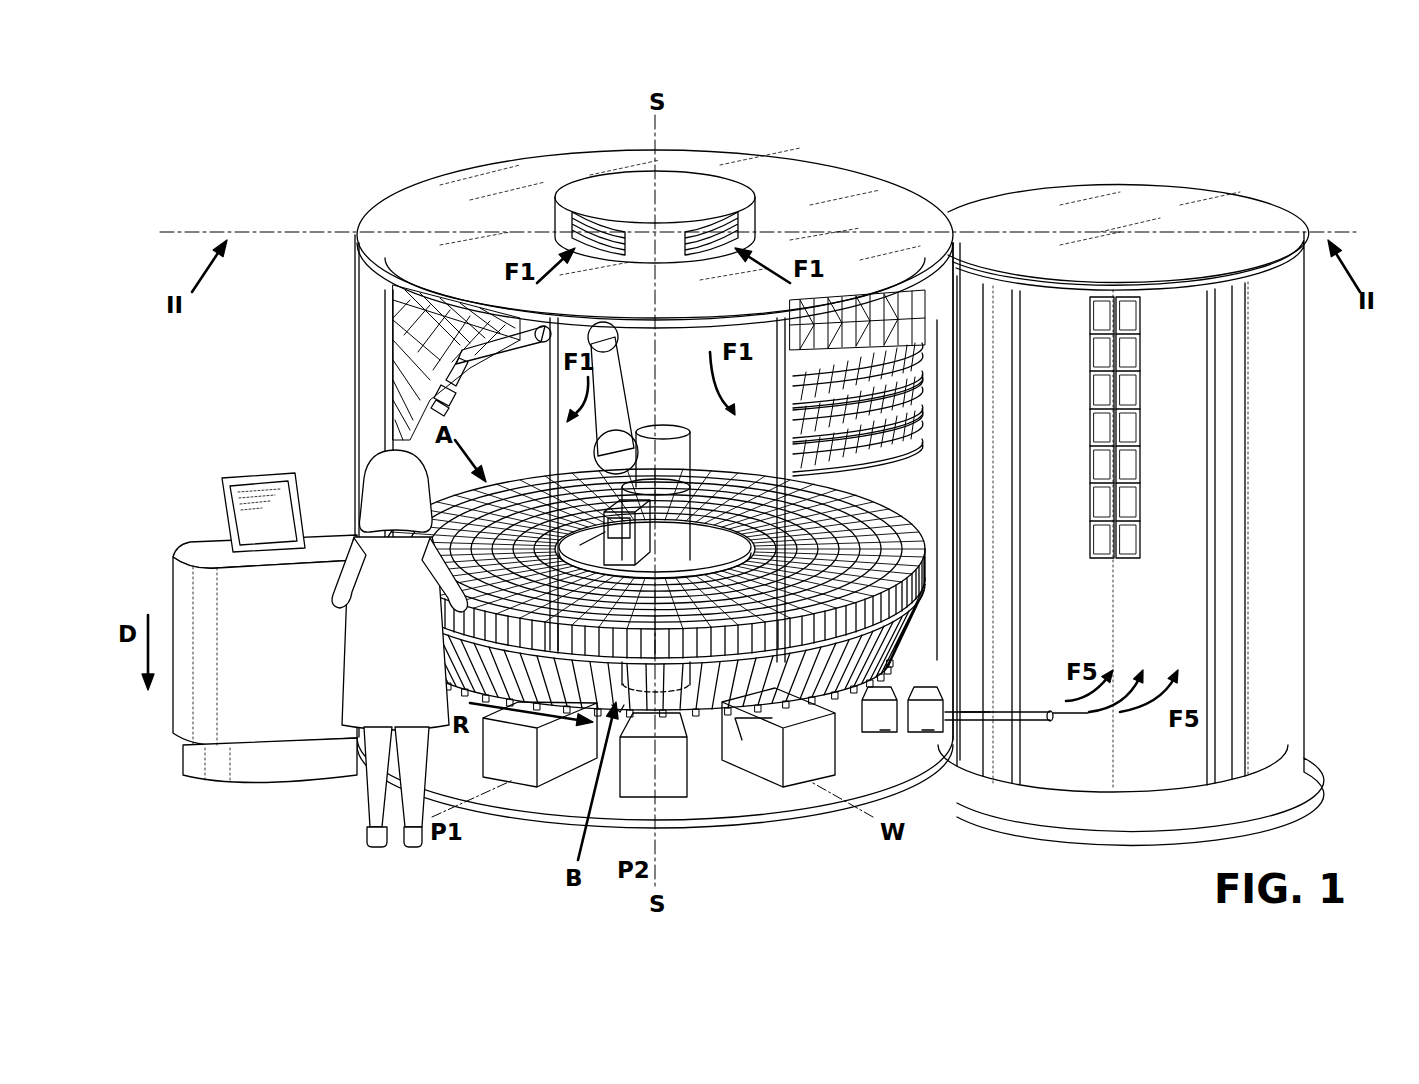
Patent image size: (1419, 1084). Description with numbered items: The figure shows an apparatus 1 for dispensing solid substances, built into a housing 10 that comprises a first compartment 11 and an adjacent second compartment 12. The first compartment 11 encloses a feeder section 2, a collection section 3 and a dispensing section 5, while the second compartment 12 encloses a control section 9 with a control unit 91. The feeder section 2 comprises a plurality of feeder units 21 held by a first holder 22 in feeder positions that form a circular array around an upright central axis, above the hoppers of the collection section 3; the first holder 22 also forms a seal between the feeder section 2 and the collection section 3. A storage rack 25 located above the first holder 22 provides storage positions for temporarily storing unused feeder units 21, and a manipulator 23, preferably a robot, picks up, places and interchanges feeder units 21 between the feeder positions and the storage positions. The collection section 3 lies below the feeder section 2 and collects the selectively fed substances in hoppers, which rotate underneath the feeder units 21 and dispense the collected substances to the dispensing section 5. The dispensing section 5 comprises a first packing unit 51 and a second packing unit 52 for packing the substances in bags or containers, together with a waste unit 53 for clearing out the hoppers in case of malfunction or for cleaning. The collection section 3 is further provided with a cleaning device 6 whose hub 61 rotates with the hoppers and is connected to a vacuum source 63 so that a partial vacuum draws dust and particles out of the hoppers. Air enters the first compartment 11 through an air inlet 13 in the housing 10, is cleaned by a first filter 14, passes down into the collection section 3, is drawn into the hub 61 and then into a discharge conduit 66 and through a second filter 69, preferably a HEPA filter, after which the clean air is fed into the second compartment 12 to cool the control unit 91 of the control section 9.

The apparatus 1 is at (348, 165).
The housing 10 is at (456, 176).
The first compartment 11 is at (357, 355).
The second compartment 12 is at (1305, 512).
The air inlet 13 is at (588, 212).
The first filter 14 is at (737, 210).
The feeder section 2 is at (504, 410).
The manipulator 23 is at (690, 445).
The storage rack 25 is at (395, 297).
The collection section 3 is at (948, 645).
The first holder 22 is at (898, 632).
The dispensing section 5 is at (888, 765).
The first packing unit 51 is at (512, 766).
The second packing unit 52 is at (675, 790).
The waste unit 53 is at (800, 770).
The cleaning device 6 is at (706, 760).
The hub 61 is at (612, 715).
The feeder units 21 is at (770, 722).
The vacuum source 63 is at (928, 735).
The discharge conduit 66 is at (973, 714).
The second filter 69 is at (885, 735).
The control section 9 is at (1286, 509).
The control unit 91 is at (1141, 510).